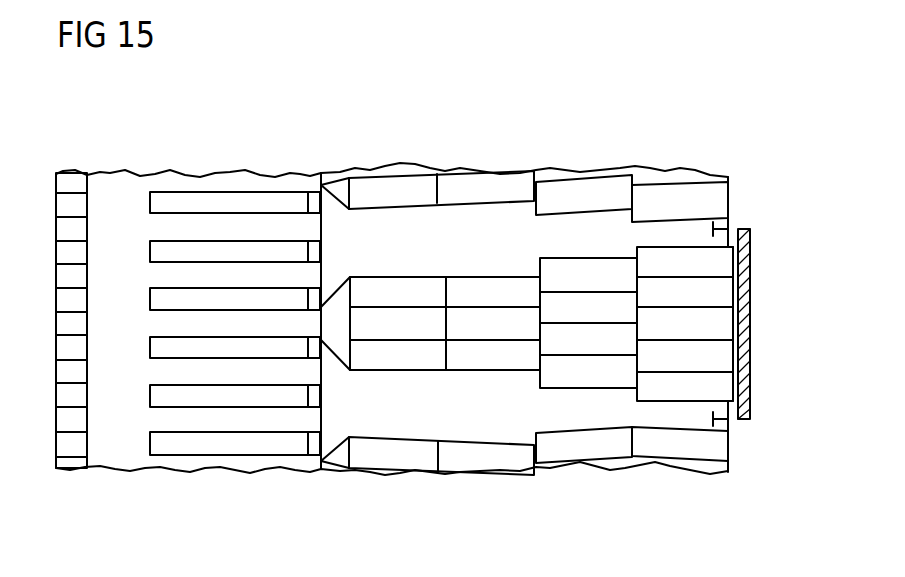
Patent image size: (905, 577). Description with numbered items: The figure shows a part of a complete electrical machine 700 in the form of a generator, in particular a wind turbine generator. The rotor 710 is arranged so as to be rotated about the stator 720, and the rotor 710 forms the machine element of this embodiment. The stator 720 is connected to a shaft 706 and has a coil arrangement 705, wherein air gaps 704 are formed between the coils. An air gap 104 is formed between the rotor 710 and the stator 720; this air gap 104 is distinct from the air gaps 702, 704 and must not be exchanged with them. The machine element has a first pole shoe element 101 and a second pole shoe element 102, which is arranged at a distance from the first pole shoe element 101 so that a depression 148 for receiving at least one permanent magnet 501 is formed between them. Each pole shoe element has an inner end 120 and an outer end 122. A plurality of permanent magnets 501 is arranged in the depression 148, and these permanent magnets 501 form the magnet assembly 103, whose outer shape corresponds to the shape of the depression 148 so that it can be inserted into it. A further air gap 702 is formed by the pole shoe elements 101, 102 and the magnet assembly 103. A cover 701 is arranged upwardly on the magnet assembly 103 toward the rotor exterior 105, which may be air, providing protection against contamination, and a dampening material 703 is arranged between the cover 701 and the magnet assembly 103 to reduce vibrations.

The electrical machine 700 is at (786, 139).
The stator 720 is at (323, 118).
The rotor 710 is at (728, 118).
The air gap 104 is at (313, 222).
The inner end 120 is at (312, 198).
The second pole shoe element 102 is at (463, 218).
The magnet assembly 103 is at (660, 178).
The first pole shoe element 101 is at (470, 428).
The outer end 122 is at (728, 227).
The rotor exterior 105 is at (762, 246).
The permanent magnet 501 is at (406, 287).
The dampening material 703 is at (750, 283).
The cover 701 is at (750, 348).
The air gap 702 is at (338, 320).
The shaft 706 is at (77, 323).
The depression 148 is at (495, 280).
The air gaps 704 is at (217, 445).
The coil arrangement 705 is at (120, 456).